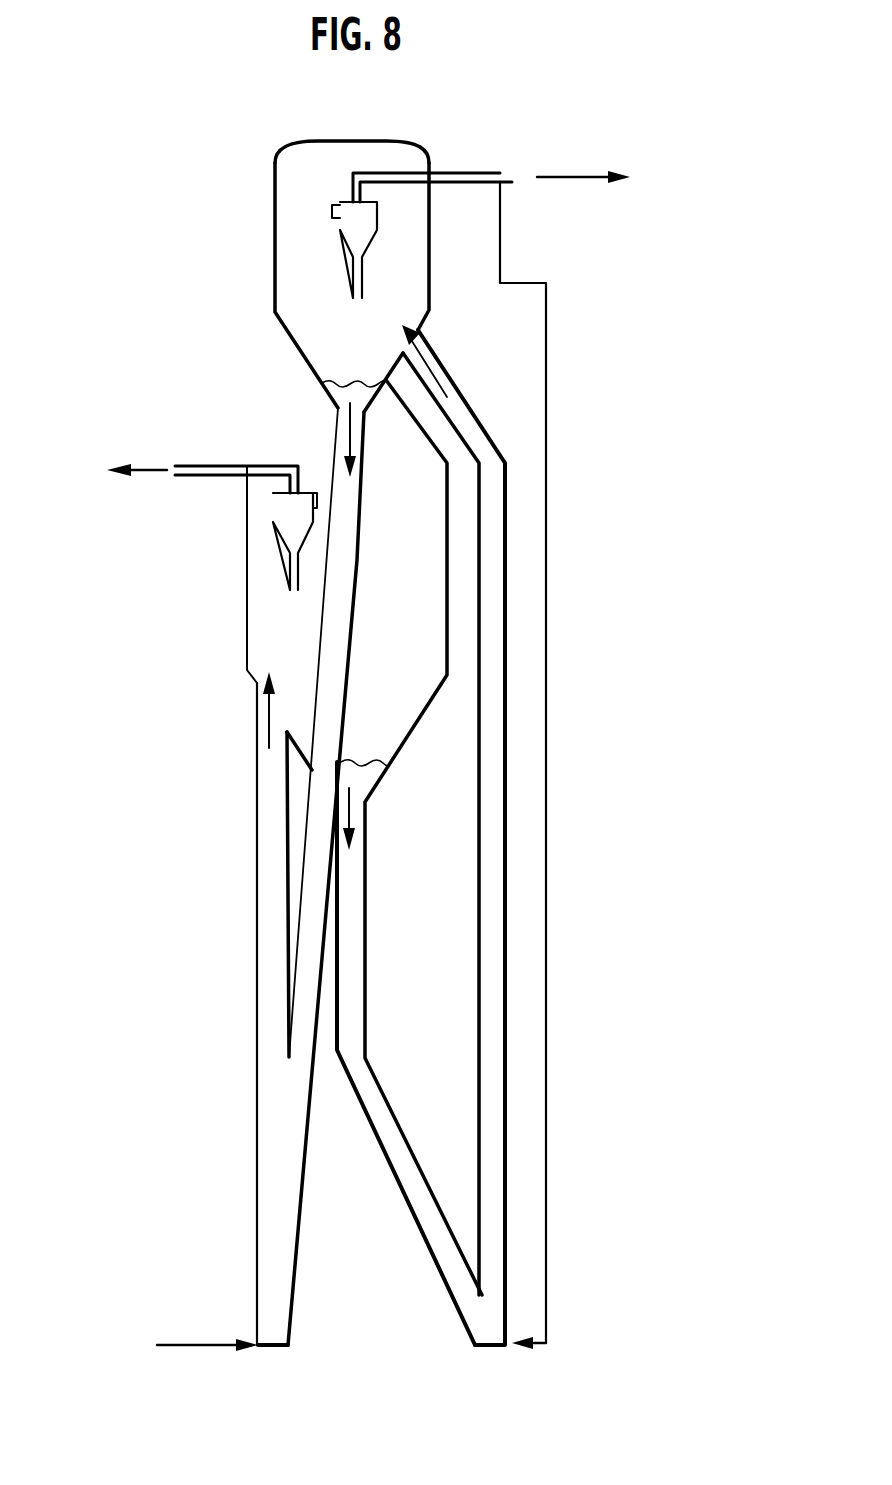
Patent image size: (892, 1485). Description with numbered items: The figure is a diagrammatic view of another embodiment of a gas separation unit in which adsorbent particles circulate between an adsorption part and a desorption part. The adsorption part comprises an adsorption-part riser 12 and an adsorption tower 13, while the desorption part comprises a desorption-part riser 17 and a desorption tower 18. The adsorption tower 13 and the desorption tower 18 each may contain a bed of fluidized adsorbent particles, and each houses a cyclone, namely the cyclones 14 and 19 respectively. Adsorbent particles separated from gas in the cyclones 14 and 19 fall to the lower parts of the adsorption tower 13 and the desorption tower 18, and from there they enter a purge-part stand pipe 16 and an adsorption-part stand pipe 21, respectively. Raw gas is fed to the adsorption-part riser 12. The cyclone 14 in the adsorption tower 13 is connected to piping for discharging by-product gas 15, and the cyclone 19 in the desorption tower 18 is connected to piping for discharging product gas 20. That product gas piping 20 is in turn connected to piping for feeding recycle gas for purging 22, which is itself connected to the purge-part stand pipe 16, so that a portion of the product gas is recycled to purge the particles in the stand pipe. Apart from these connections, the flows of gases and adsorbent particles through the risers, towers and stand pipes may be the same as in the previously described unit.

The adsorption-part riser 12 is at (257, 876).
The adsorption tower 13 is at (245, 660).
The cyclone 14 is at (273, 517).
The piping for discharging by-product gas 15 is at (151, 467).
The purge-part stand pipe 16 is at (430, 1247).
The desorption-part riser 17 is at (508, 702).
The desorption tower 18 is at (275, 258).
The cyclone 19 is at (343, 205).
The piping for discharging product gas 20 is at (570, 172).
The adsorption-part stand pipe 21 is at (328, 628).
The piping for feeding recycle gas for purging 22 is at (549, 875).